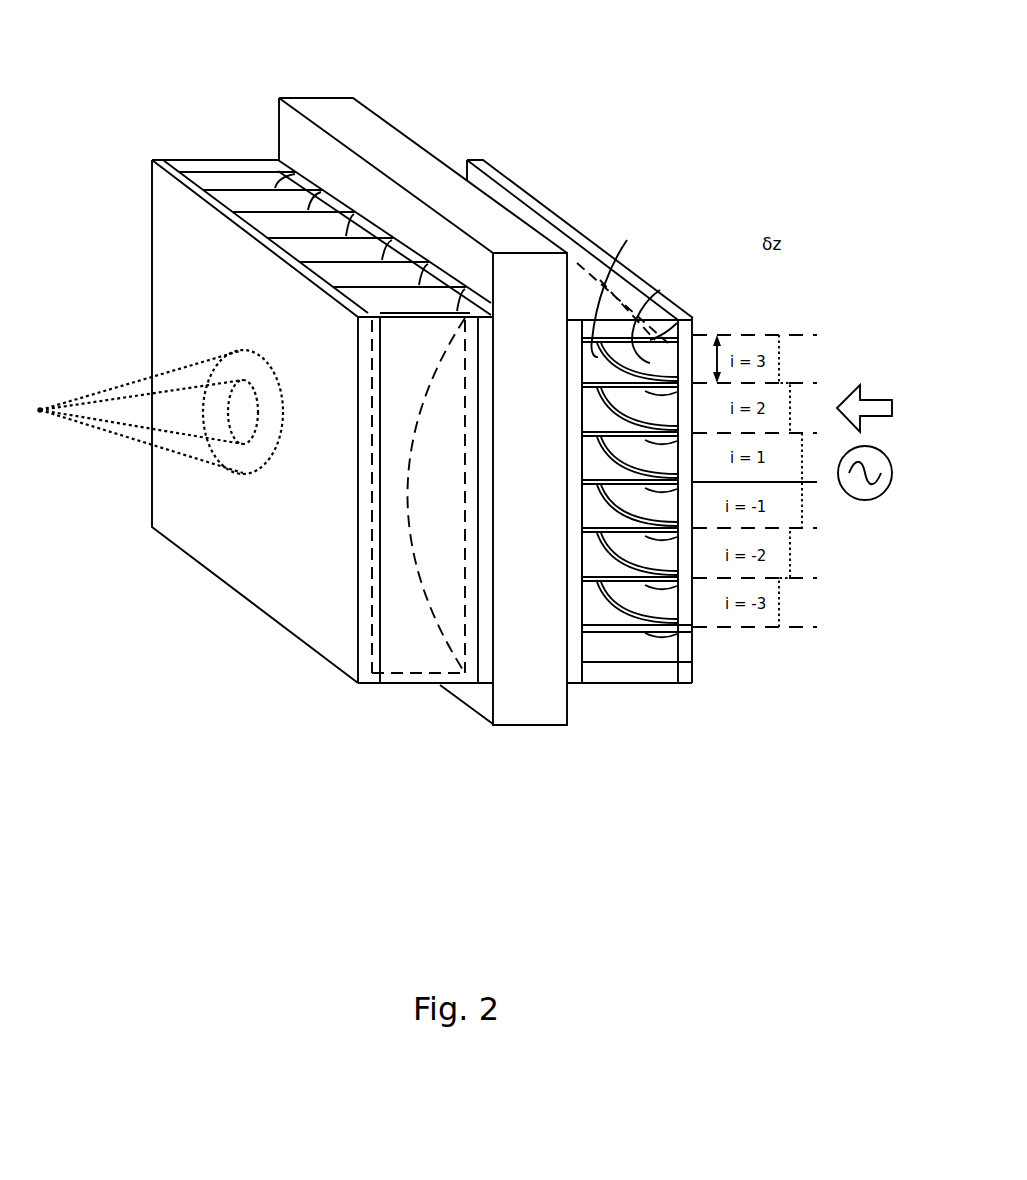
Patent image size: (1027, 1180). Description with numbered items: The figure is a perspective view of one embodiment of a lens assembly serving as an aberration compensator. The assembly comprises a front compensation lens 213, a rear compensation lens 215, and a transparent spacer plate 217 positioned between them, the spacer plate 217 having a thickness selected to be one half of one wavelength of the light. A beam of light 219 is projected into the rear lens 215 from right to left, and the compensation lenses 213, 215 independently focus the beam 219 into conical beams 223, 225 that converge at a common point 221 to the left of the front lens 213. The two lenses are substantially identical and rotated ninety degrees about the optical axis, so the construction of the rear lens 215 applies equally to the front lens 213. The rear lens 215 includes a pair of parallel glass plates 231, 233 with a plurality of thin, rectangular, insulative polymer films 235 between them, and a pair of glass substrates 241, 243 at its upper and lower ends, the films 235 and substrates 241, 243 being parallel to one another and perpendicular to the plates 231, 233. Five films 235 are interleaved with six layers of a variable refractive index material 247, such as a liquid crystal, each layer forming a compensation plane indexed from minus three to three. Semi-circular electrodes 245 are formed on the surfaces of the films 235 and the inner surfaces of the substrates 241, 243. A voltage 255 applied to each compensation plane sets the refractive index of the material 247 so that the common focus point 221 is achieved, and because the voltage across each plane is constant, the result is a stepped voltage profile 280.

The front compensation lens 213 is at (134, 164).
The rear compensation lens 215 is at (528, 177).
The transparent spacer plate 217 is at (310, 98).
The beam of light 219 is at (872, 400).
The common point 221 is at (40, 410).
The conical beam 223 is at (122, 387).
The conical beam 225 is at (108, 423).
The glass plate 231 is at (575, 668).
The glass plate 233 is at (688, 640).
The polymer film 235 is at (688, 668).
The glass substrate 241 is at (632, 310).
The glass substrate 243 is at (660, 670).
The electrode 245 is at (688, 318).
The variable refractive index material 247 is at (600, 360).
The voltage 255 is at (872, 503).
The stepped voltage profile 280 is at (780, 335).